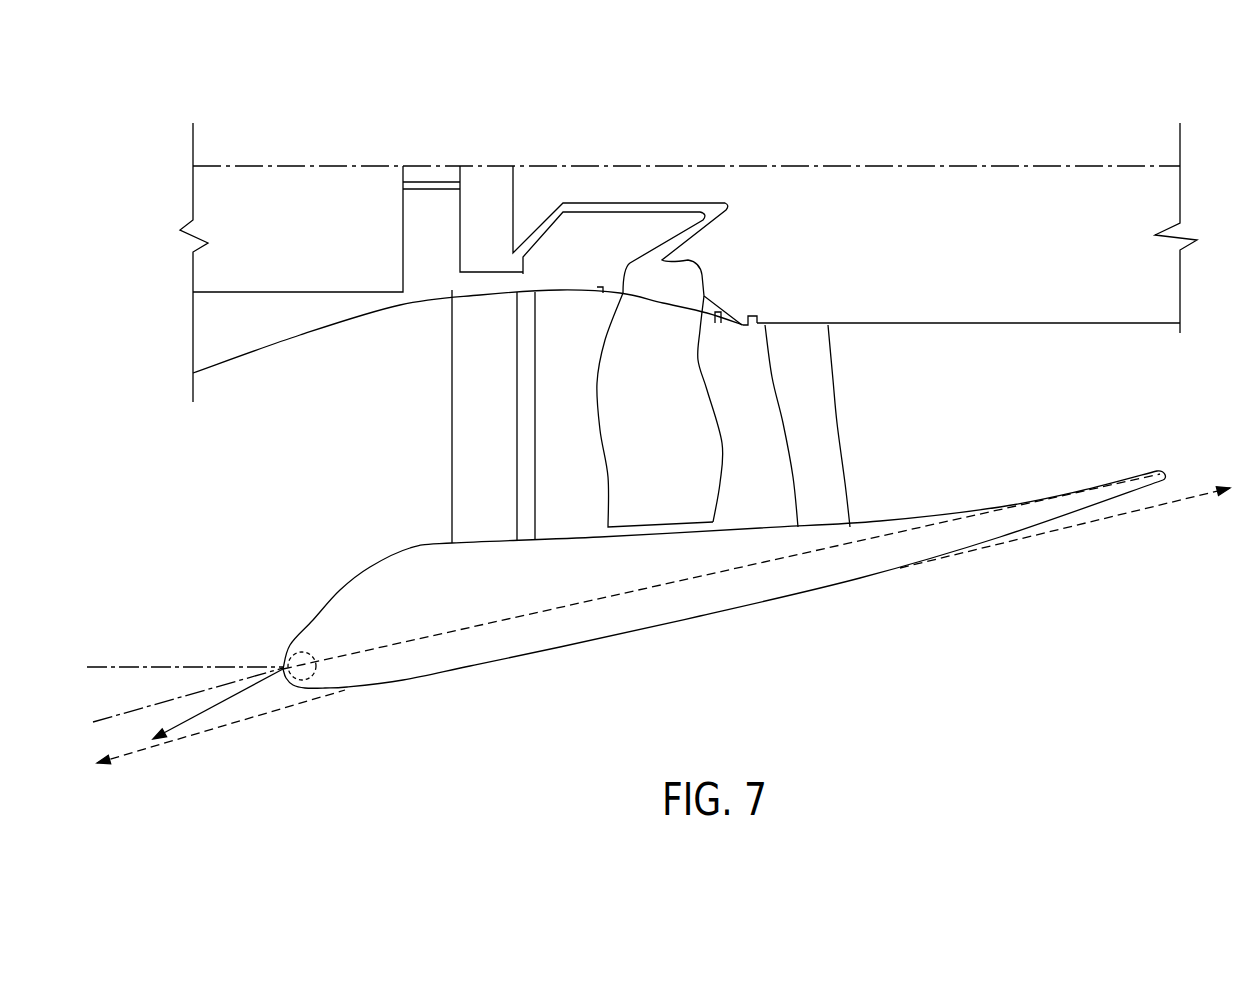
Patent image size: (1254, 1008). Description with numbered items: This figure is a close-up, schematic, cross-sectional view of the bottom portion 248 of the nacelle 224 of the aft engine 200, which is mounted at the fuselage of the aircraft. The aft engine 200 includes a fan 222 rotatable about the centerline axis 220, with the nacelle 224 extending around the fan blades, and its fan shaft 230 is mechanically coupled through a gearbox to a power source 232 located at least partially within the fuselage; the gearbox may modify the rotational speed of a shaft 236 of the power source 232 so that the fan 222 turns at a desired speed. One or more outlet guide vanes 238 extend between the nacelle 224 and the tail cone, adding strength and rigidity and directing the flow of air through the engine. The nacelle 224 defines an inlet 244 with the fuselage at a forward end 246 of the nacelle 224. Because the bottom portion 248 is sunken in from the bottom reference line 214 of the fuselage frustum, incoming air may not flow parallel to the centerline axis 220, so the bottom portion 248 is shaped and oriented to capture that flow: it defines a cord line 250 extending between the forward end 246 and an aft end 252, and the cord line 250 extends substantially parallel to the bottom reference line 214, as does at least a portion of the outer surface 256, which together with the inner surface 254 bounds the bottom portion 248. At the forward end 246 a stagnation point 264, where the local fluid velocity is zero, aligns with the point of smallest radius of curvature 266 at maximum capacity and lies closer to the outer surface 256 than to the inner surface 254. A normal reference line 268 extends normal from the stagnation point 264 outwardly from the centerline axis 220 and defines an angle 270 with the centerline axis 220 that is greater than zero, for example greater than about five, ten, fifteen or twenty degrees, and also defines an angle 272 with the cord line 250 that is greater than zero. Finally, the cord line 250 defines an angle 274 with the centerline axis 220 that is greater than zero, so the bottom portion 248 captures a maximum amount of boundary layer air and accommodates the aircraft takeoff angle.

The aft engine 200 is at (1025, 117).
The bottom reference line 214 is at (148, 752).
The centerline axis 220 is at (932, 167).
The fan 222 is at (680, 338).
The nacelle 224 is at (440, 673).
The fan shaft 230 is at (668, 205).
The power source 232 is at (280, 193).
The shaft 236 is at (435, 183).
The outlet guide vane 238 is at (823, 428).
The inlet 244 is at (222, 506).
The forward end 246 is at (288, 724).
The bottom portion 248 is at (553, 648).
The cord line 250 is at (737, 568).
The aft end 252 is at (1185, 467).
The inner surface 254 is at (415, 537).
The outer surface 256 is at (597, 652).
The stagnation point 264 is at (281, 684).
The smallest radius of curvature 266 is at (290, 653).
The normal reference line 268 is at (190, 718).
The angle 270 is at (216, 689).
The angle 272 is at (176, 714).
The angle 274 is at (242, 683).